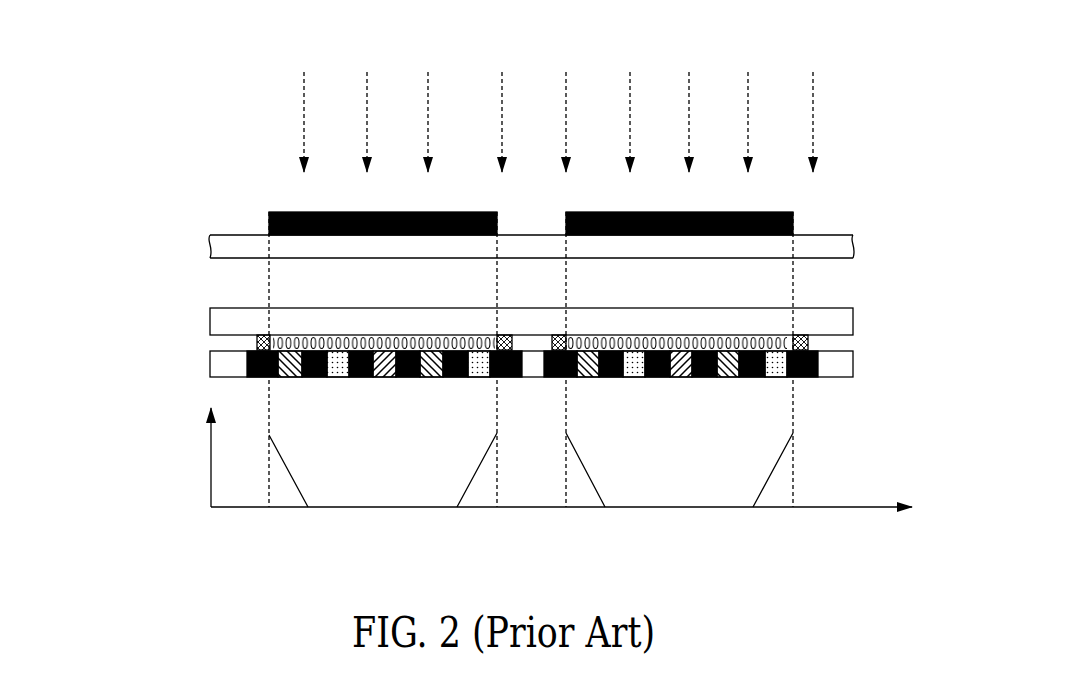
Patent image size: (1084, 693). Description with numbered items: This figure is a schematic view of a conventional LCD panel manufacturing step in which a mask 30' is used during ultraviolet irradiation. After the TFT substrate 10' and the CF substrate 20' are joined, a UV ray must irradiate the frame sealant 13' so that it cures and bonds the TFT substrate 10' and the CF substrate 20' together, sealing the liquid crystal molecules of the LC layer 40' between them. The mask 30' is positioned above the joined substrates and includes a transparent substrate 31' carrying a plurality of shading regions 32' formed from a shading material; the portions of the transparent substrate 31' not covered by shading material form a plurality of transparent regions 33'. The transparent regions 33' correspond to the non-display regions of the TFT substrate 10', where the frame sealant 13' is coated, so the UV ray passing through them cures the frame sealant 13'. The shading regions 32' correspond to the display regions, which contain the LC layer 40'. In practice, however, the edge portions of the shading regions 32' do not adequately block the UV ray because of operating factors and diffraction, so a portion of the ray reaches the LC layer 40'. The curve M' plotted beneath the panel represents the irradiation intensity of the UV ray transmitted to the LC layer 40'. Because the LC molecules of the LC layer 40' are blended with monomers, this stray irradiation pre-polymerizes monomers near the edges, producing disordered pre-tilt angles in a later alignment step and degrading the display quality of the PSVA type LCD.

The mask 30' is at (469, 316).
The transparent substrate 31' is at (507, 205).
The shading regions 32' is at (525, 180).
The transparent regions 33' is at (381, 316).
The TFT substrate 10' is at (483, 309).
The liquid crystal layer 40' is at (472, 304).
The frame sealant 13' is at (468, 341).
The CF substrate 20' is at (479, 384).
The irradiation intensity of the UV ray M' is at (561, 475).